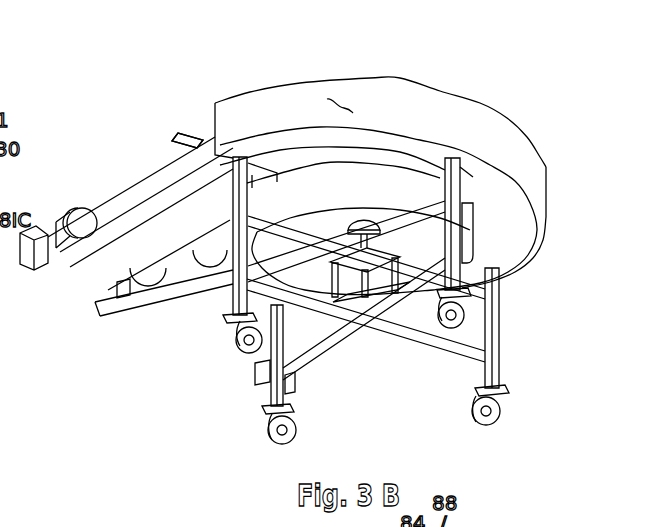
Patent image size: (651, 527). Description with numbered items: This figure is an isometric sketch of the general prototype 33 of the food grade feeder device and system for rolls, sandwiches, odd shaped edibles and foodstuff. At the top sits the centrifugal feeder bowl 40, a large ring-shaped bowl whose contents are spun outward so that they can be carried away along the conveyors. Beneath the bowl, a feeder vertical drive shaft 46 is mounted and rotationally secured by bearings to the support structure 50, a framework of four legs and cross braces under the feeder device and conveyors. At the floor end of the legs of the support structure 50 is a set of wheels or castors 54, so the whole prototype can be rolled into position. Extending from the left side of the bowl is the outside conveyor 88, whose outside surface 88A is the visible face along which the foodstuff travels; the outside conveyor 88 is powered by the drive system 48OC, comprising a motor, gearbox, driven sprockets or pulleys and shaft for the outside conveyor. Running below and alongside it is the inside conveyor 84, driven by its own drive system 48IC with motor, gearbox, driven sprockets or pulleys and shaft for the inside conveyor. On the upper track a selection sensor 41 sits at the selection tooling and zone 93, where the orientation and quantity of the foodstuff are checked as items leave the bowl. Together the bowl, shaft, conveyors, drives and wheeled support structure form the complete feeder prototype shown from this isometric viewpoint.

The centrifugal feeder bowl 40 is at (352, 193).
The outside surface of outside conveyor 88A is at (352, 100).
The outside conveyor 88 is at (98, 247).
The selection sensor 41 is at (175, 134).
The selection tooling and zone 93 is at (187, 140).
The outside conveyor drive system 48OC is at (58, 213).
The inside conveyor 84 is at (115, 265).
The inside conveyor drive system 48IC is at (135, 295).
The support structure 50 is at (500, 327).
The wheels or castors 54 is at (500, 415).
The feeder vertical drive shaft 46 is at (368, 237).
The general prototype 33 is at (169, 408).